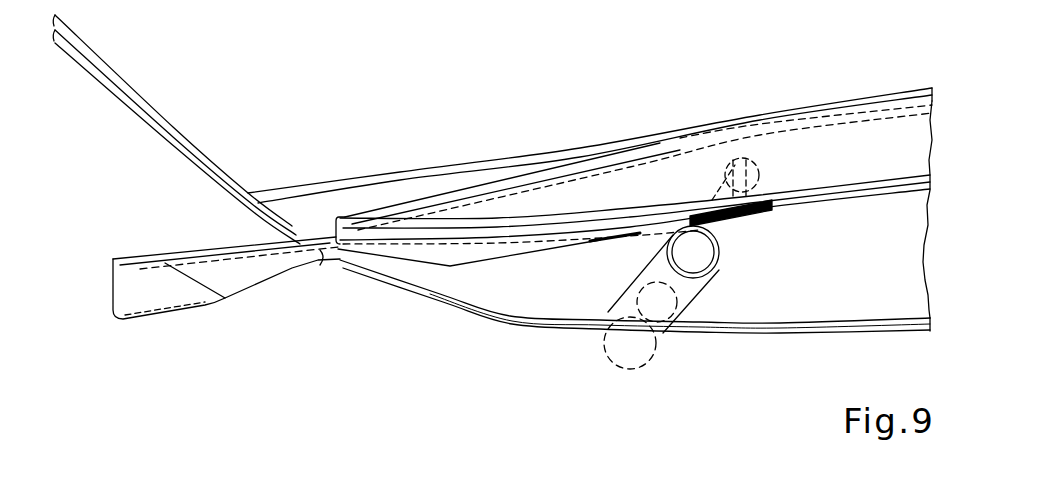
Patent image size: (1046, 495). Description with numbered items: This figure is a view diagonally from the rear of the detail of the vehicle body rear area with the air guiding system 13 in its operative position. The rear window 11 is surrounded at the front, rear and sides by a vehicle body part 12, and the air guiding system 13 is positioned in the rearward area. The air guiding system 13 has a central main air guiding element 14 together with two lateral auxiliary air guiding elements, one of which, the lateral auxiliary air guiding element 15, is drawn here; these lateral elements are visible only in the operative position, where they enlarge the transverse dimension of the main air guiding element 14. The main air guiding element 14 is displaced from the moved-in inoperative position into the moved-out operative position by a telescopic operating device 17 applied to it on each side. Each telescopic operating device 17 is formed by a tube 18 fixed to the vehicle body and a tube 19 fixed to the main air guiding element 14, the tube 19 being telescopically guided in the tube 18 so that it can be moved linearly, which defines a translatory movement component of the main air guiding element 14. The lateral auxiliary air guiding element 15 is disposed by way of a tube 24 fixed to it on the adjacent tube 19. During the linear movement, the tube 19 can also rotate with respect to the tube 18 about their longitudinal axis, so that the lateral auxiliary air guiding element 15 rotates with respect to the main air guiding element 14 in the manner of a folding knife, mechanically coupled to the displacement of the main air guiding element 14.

The rear window 11 is at (380, 141).
The vehicle body part 12 is at (187, 180).
The air guiding system 13 is at (657, 142).
The central main air guiding element 14 is at (603, 178).
The lateral auxiliary air guiding element 15 is at (177, 293).
The telescopic operating device 17 is at (617, 372).
The tube fixed to the vehicle body 18 is at (612, 300).
The tube fixed to the main air guiding element 19 is at (712, 200).
The tube fixed to the auxiliary air guiding element 24 is at (765, 215).